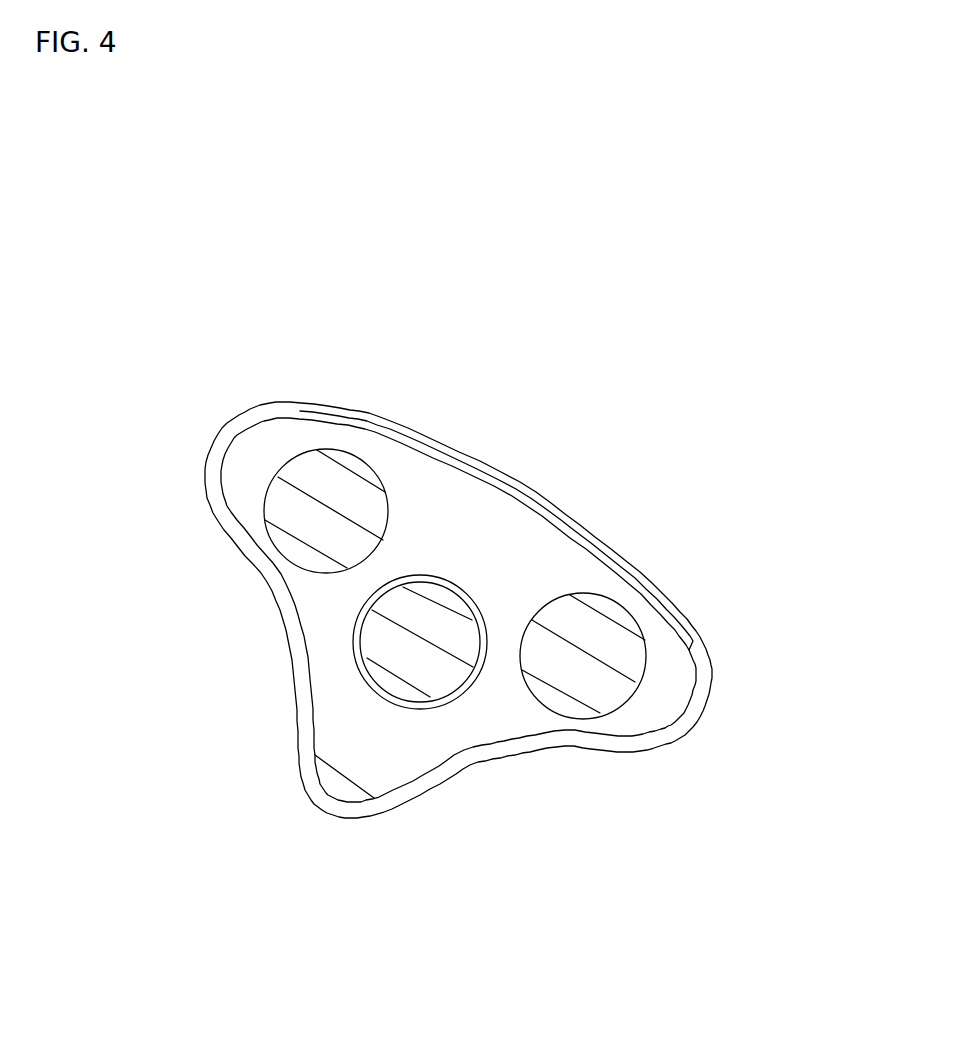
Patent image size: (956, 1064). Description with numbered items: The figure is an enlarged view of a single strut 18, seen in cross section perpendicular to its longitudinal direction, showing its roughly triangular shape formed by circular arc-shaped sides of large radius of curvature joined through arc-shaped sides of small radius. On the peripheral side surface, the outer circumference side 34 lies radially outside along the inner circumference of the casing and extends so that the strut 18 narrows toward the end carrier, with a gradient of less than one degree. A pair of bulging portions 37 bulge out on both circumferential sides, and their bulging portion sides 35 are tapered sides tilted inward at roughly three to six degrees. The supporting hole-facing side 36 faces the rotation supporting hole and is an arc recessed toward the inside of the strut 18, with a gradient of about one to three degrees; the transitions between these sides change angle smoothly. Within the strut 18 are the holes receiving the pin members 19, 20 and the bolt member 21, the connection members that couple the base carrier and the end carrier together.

The strut 18 is at (461, 609).
The pin member 19 is at (592, 668).
The pin member 20 is at (323, 520).
The bolt member 21 is at (419, 620).
The outer circumference side 34 is at (512, 492).
The bulging portion side 35 is at (213, 457).
The supporting hole-facing side 36 is at (292, 623).
The bulging portion 37 is at (247, 423).